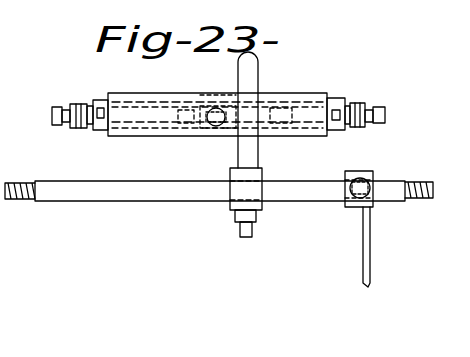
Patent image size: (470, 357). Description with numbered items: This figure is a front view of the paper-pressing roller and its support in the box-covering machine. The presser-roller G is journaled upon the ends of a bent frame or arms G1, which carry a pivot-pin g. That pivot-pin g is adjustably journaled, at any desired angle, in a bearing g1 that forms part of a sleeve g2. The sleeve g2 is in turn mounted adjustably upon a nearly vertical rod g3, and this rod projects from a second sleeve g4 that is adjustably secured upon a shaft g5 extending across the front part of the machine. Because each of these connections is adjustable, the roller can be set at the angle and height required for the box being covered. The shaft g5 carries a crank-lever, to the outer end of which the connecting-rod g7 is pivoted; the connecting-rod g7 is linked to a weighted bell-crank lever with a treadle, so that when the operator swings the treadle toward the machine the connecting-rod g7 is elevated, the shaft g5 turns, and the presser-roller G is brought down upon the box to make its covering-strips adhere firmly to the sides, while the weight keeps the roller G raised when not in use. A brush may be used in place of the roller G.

The presser-roller G is at (318, 93).
The bent frame or arms G1 is at (338, 100).
The pivot-pin g is at (212, 124).
The bearing g1 is at (206, 97).
The sleeve g2 is at (259, 105).
The nearly vertical rod g3 is at (216, 135).
The sleeve g4 is at (259, 197).
The shaft g5 is at (219, 194).
The connecting-rod g7 is at (377, 247).